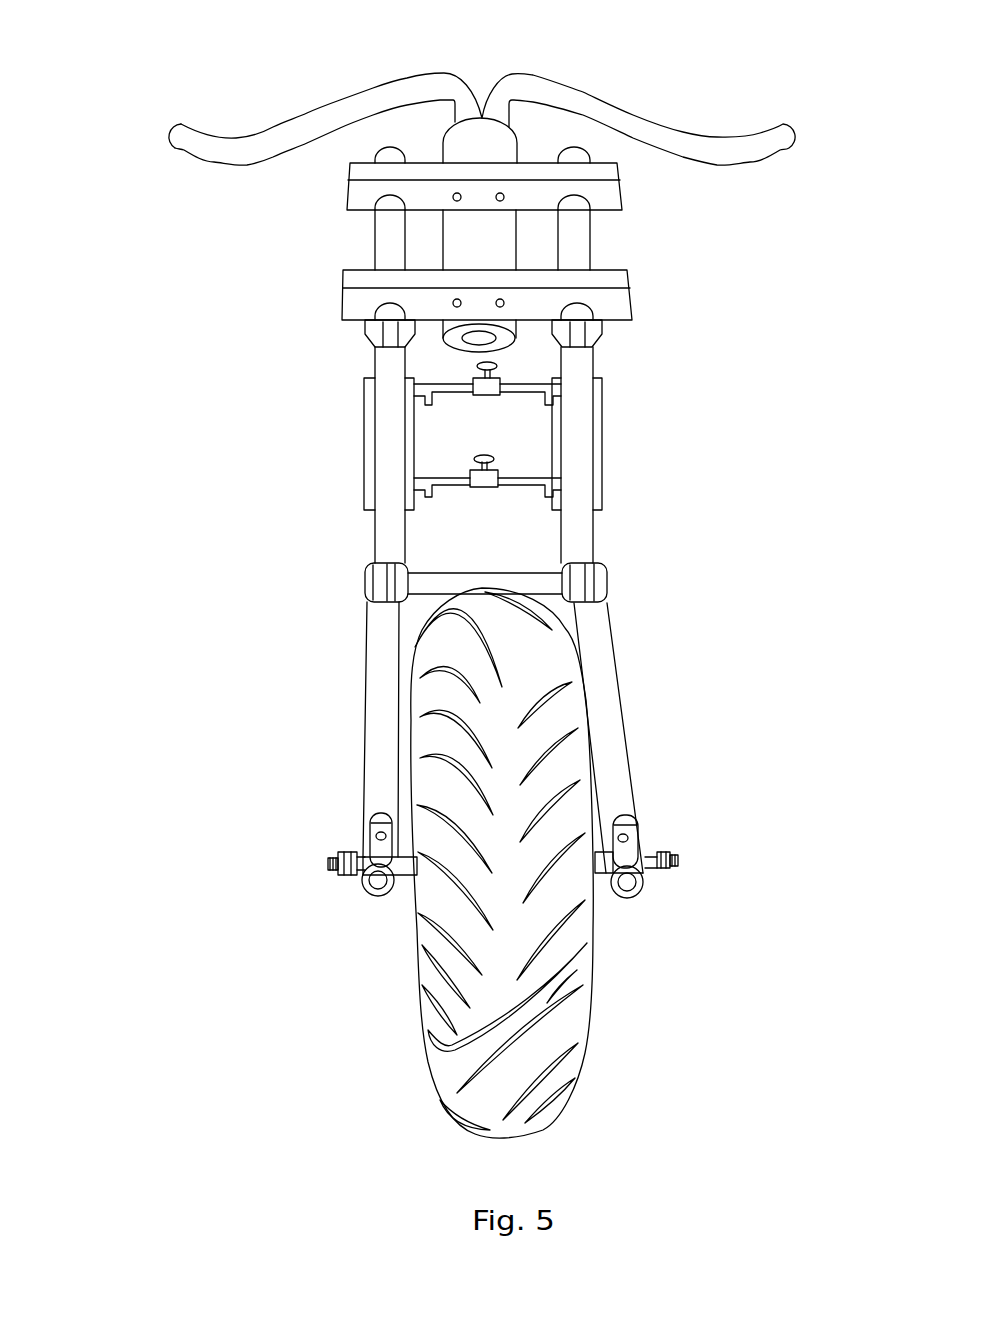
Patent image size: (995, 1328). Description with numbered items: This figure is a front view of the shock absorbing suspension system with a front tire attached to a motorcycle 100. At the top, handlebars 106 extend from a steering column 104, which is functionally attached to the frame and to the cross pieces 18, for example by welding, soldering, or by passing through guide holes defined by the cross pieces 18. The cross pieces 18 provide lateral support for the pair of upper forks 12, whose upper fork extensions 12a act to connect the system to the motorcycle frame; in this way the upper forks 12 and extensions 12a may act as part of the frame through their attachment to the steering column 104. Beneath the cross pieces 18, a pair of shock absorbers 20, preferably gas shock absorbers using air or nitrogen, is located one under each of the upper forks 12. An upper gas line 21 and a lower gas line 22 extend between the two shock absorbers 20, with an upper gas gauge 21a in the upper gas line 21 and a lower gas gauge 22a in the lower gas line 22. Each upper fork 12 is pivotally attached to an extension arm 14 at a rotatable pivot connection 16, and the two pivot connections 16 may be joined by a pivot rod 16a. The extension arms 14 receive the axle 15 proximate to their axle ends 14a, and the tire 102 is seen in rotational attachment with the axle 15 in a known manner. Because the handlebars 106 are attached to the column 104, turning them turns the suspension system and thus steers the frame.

The motorcycle 100 is at (120, 84).
The handlebars 106 is at (367, 110).
The steering column 104 is at (502, 139).
The cross pieces 18 is at (348, 179).
The upper forks 12 is at (384, 232).
The upper fork extensions 12a is at (580, 236).
The shock absorbers 20 is at (364, 428).
The upper gas line 21 is at (522, 388).
The upper gas gauge 21a is at (478, 366).
The lower gas line 22 is at (526, 478).
The lower gas gauge 22a is at (486, 457).
The pivot rod 16a is at (494, 583).
The pivot connection 16 is at (365, 580).
The extension arms 14 is at (377, 706).
The axle end 14a is at (357, 878).
The axle 15 is at (403, 878).
The tire 102 is at (448, 1063).